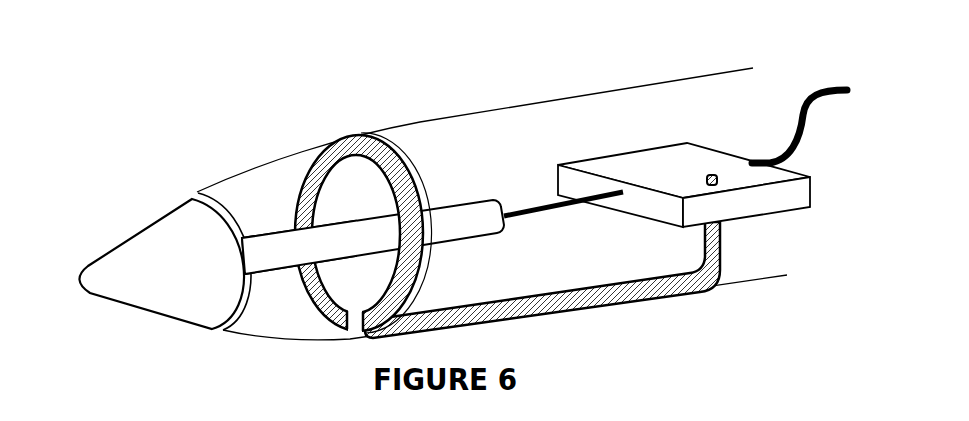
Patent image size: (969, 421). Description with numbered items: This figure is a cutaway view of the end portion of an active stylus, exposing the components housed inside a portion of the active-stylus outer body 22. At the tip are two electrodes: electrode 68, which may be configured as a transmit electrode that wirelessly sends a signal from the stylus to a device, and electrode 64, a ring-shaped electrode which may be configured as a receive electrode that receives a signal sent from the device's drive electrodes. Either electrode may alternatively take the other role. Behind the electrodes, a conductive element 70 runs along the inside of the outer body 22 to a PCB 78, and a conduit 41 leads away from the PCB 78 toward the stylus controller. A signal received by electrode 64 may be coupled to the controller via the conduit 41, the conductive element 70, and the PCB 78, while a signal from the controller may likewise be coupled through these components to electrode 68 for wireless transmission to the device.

The active-stylus outer body 22 is at (664, 78).
The conduit 41 is at (811, 90).
The electrode 64 is at (283, 150).
The electrode 68 is at (127, 233).
The conductive element 70 is at (475, 302).
The PCB 78 is at (770, 219).